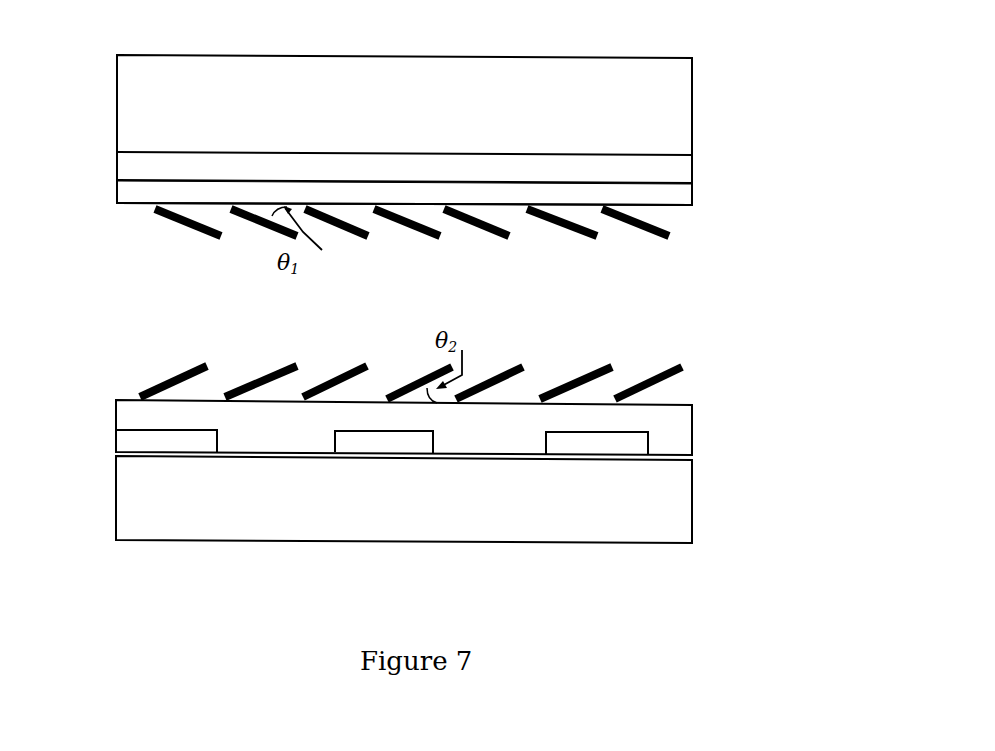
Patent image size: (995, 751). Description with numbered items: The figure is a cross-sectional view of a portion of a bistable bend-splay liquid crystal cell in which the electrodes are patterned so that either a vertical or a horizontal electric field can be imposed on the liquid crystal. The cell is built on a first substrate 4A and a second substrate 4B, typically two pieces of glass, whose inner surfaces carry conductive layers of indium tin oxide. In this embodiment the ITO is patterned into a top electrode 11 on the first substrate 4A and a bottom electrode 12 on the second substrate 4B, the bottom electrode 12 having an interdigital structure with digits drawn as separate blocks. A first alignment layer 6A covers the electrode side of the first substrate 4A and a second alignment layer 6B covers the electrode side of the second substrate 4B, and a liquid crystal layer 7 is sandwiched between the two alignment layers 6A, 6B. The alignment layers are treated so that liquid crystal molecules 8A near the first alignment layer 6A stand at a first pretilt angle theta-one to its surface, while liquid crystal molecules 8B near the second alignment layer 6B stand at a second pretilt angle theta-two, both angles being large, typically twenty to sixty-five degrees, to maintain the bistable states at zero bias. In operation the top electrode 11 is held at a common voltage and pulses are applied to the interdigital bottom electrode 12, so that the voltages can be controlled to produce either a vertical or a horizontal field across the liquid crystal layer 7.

The first substrate 4A is at (662, 101).
The top electrode 11 is at (662, 167).
The first alignment layer 6A is at (145, 192).
The liquid crystal molecules near the first alignment layer 8A is at (170, 236).
The liquid crystal layer 7 is at (170, 304).
The liquid crystal molecules near the second alignment layer 8B is at (158, 373).
The second alignment layer 6B is at (657, 417).
The bottom electrode 12 is at (116, 433).
The second substrate 4B is at (116, 489).